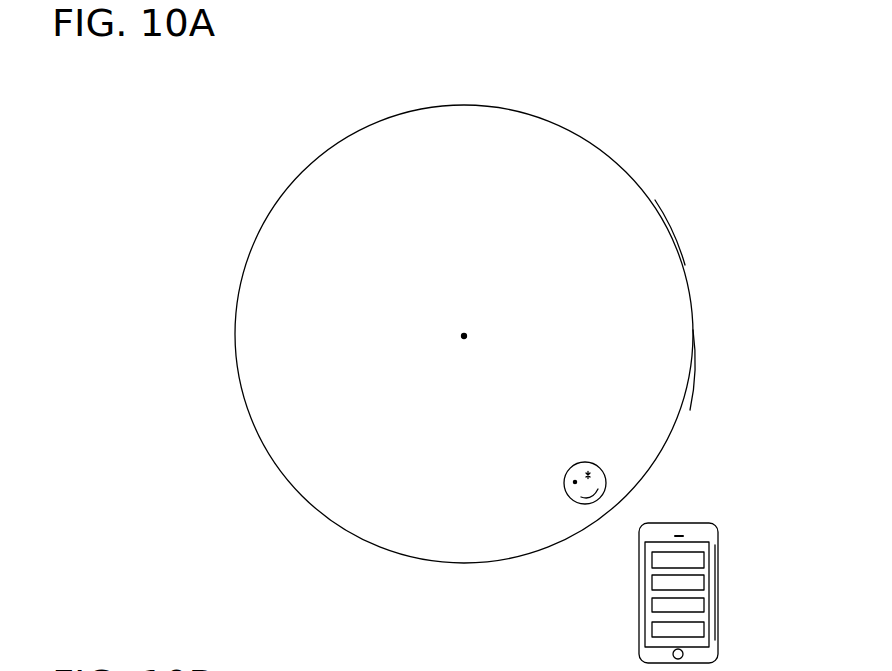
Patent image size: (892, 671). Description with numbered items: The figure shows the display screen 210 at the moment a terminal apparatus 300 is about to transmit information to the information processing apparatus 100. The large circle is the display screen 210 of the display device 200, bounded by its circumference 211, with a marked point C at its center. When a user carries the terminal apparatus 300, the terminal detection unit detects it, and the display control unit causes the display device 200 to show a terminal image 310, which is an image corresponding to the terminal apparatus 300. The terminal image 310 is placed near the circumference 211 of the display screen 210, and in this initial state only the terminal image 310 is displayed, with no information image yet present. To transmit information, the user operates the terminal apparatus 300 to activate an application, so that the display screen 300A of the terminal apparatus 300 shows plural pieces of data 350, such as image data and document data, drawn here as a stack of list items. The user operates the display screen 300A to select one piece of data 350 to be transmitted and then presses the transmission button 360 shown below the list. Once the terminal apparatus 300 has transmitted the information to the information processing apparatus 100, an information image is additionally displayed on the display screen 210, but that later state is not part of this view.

The information processing apparatus 100 is at (311, 118).
The display device 200 is at (627, 152).
The display screen 210 is at (630, 239).
The circumference 211 is at (692, 372).
The center point C is at (464, 330).
The terminal image 310 is at (572, 507).
The terminal apparatus 300 is at (713, 525).
The display screen 300A is at (710, 541).
The pieces of data 350 is at (710, 557).
The transmission button 360 is at (710, 632).